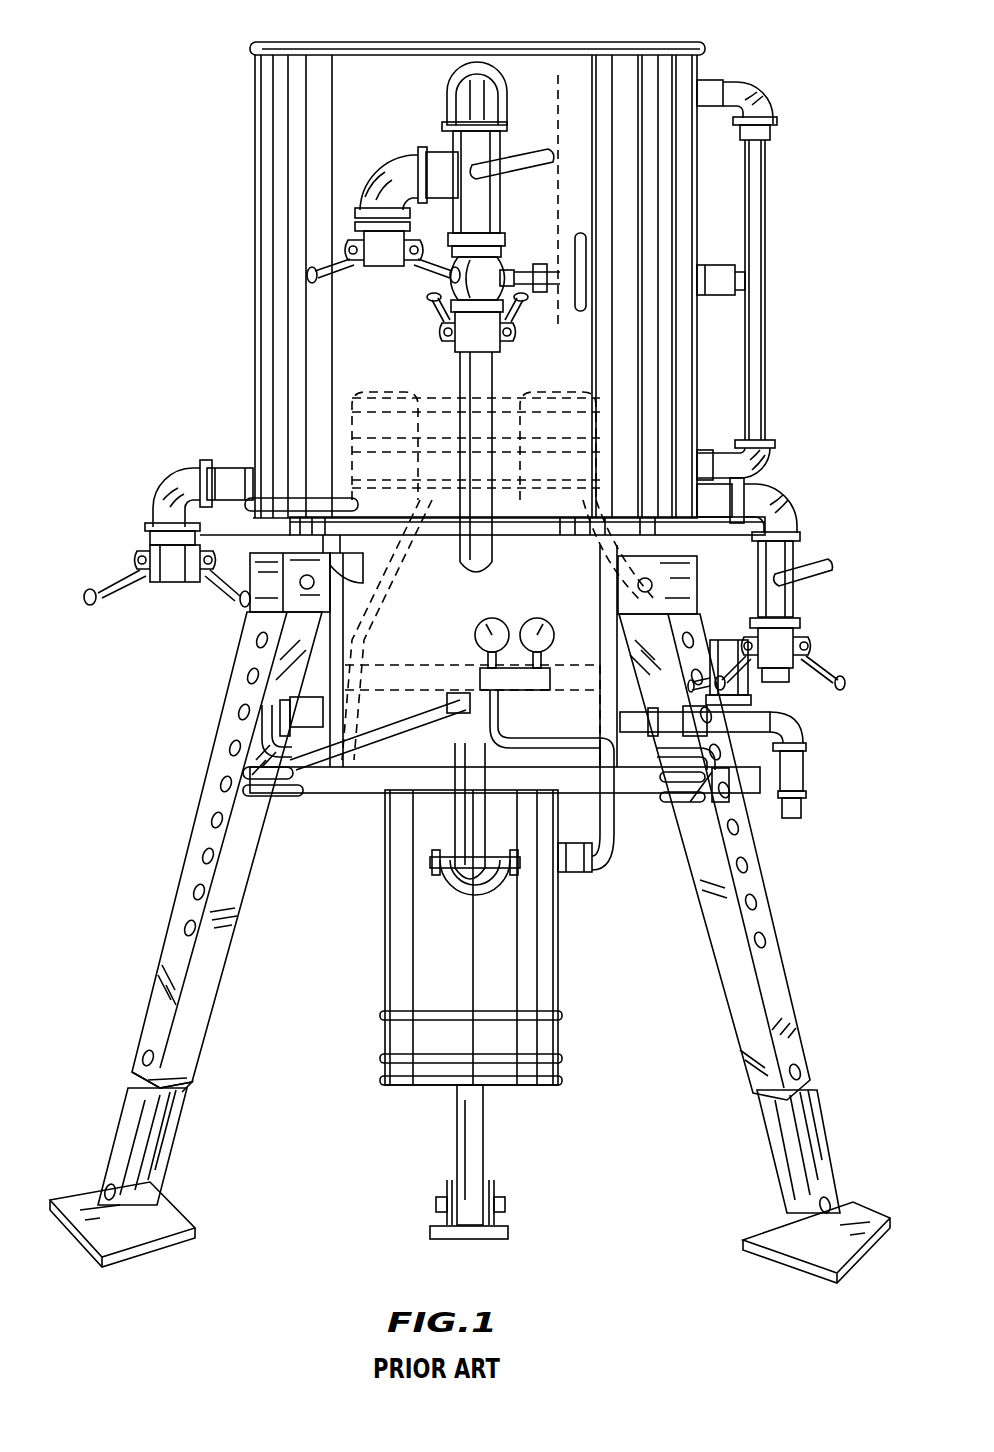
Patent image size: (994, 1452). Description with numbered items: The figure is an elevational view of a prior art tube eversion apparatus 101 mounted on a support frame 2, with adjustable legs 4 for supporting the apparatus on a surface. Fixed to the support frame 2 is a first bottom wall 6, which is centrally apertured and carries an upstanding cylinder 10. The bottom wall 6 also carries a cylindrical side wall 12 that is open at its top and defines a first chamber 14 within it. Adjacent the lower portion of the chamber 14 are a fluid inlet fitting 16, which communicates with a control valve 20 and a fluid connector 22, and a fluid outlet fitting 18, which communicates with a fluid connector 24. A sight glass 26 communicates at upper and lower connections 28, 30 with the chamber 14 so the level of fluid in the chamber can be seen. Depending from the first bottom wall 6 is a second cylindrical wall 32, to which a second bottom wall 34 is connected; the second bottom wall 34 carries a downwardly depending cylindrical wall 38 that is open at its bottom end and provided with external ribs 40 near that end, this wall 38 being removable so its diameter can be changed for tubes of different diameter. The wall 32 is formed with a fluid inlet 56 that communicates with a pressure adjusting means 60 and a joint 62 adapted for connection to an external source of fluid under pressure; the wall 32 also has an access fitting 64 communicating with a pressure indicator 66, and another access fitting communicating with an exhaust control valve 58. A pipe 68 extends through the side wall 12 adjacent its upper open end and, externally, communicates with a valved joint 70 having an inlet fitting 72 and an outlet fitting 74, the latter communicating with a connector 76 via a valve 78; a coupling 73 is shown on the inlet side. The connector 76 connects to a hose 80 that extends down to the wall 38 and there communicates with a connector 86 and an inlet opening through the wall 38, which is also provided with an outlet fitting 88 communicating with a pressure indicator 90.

The support frame 2 is at (250, 600).
The adjustable legs 4 is at (220, 932).
The first bottom wall 6 is at (262, 530).
The upstanding cylinder 10 is at (345, 470).
The cylindrical side wall 12 is at (248, 300).
The first chamber 14 is at (642, 258).
The fluid inlet fitting 16 is at (770, 496).
The fluid outlet fitting 18 is at (236, 470).
The control valve 20 is at (797, 556).
The fluid connector 22 is at (805, 641).
The fluid connector 24 is at (160, 557).
The sight glass 26 is at (768, 307).
The upper sight glass connection 28 is at (712, 80).
The lower sight glass connection 30 is at (728, 452).
The second cylindrical wall 32 is at (400, 770).
The second bottom wall 34 is at (300, 796).
The downwardly depending cylindrical wall 38 is at (560, 964).
The external ribs 40 is at (565, 1058).
The fluid inlet 56 is at (672, 798).
The exhaust control valve 58 is at (722, 802).
The pressure adjusting means 60 is at (727, 640).
The joint 62 is at (808, 762).
The access fitting 64 is at (290, 710).
The pressure indicator 66 is at (540, 618).
The pipe 68 is at (478, 78).
The valved joint 70 is at (503, 142).
The inlet fitting 72 is at (440, 150).
The coupling 73 is at (385, 266).
The outlet fitting 74 is at (508, 240).
The connector 76 is at (455, 342).
The valve 78 is at (505, 263).
The hose 80 is at (497, 373).
The connector 86 is at (430, 862).
The outlet fitting 88 is at (575, 870).
The pressure indicator 90 is at (485, 626).
The tube eversion apparatus 101 is at (848, 572).